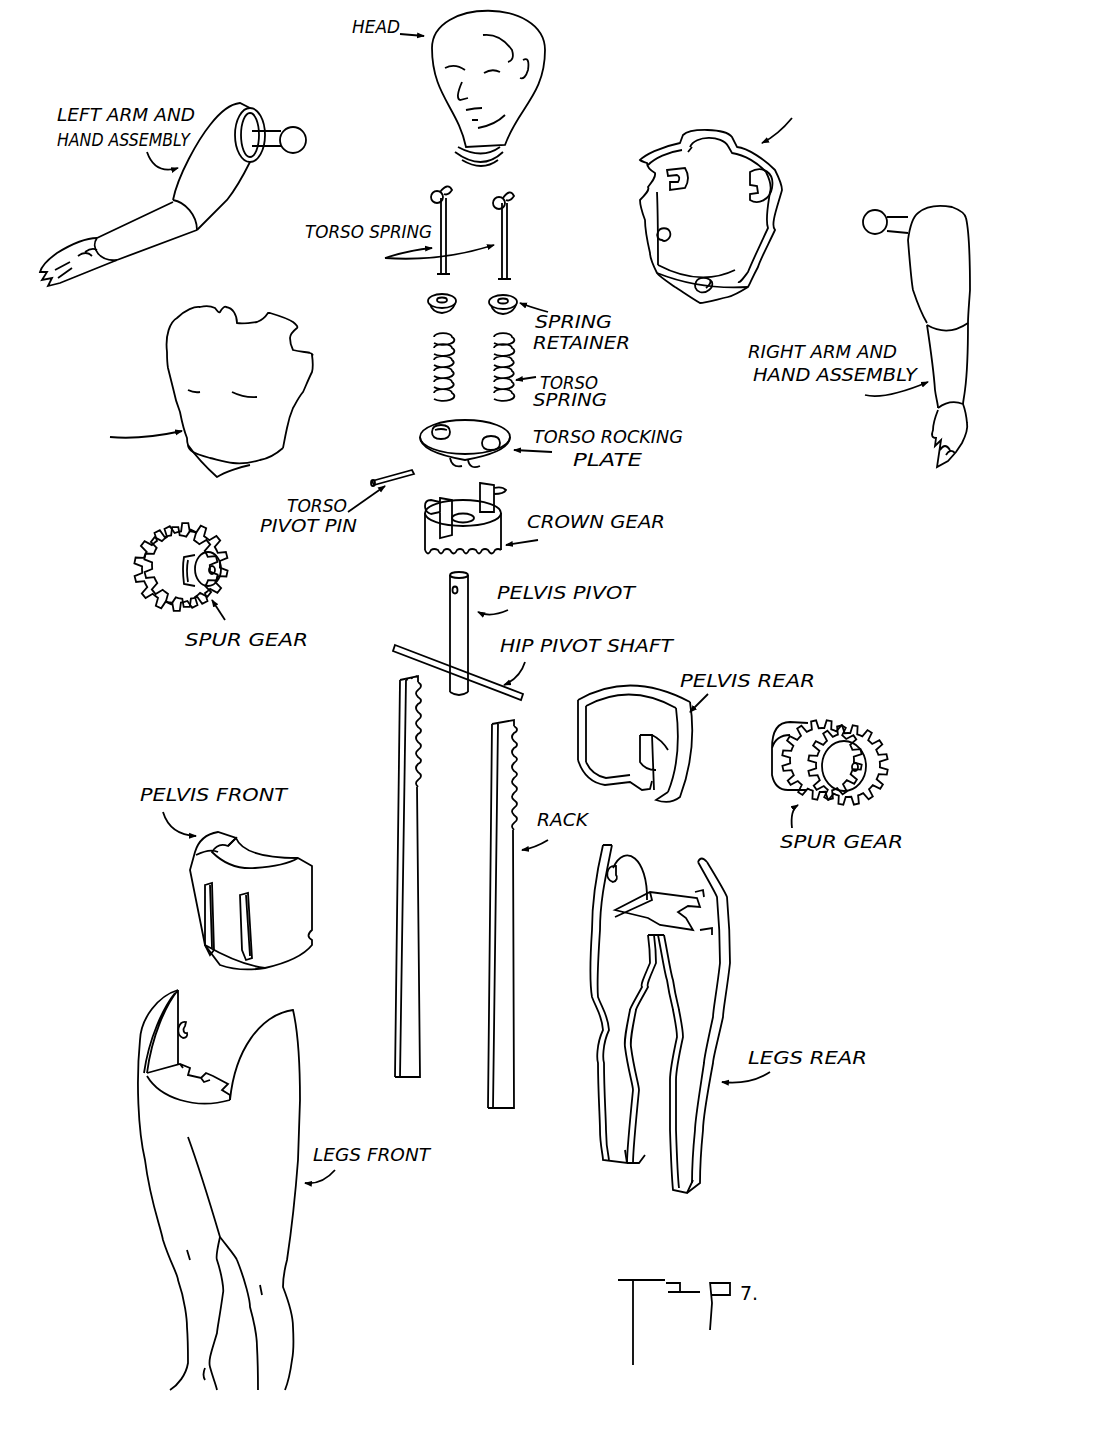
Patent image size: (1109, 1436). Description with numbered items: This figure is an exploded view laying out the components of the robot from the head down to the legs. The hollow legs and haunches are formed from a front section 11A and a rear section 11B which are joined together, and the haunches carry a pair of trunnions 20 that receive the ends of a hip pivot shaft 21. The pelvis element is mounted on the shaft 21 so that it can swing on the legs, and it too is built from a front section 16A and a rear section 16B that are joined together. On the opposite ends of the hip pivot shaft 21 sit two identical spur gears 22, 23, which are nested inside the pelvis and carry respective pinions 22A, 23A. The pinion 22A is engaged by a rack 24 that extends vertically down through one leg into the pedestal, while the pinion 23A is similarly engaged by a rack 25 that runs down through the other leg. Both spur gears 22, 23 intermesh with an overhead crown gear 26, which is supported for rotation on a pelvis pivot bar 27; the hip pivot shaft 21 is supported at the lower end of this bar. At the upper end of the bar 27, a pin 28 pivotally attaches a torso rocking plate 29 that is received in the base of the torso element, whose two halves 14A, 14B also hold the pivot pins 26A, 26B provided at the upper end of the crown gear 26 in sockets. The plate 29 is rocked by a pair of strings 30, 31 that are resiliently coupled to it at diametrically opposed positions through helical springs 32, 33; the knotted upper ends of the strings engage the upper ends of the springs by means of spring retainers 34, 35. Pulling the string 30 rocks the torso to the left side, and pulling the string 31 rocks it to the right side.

The front section of legs and haunches 11A is at (280, 1242).
The rear section of legs and haunches 11B is at (702, 1113).
The torso element half 14A is at (247, 312).
The torso element half 14B is at (772, 203).
The pelvis front section 16A is at (297, 894).
The pelvis rear section 16B is at (681, 778).
The trunnion 20 is at (190, 1028).
The hip pivot shaft 21 is at (398, 648).
The spur gear 22 is at (181, 567).
The pinion 22A is at (155, 553).
The spur gear 23 is at (854, 742).
The pinion 23A is at (870, 749).
The rack 24 is at (400, 838).
The rack 25 is at (497, 897).
The crown gear 26 is at (476, 526).
The pivot pin 26A is at (432, 516).
The pivot pin 26B is at (506, 488).
The pelvis pivot bar 27 is at (450, 588).
The pin 28 is at (392, 473).
The torso rocking plate 29 is at (433, 429).
The string 30 is at (431, 204).
The string 31 is at (512, 203).
The helical spring 32 is at (433, 366).
The helical spring 33 is at (493, 341).
The spring retainer 34 is at (428, 302).
The spring retainer 35 is at (512, 293).